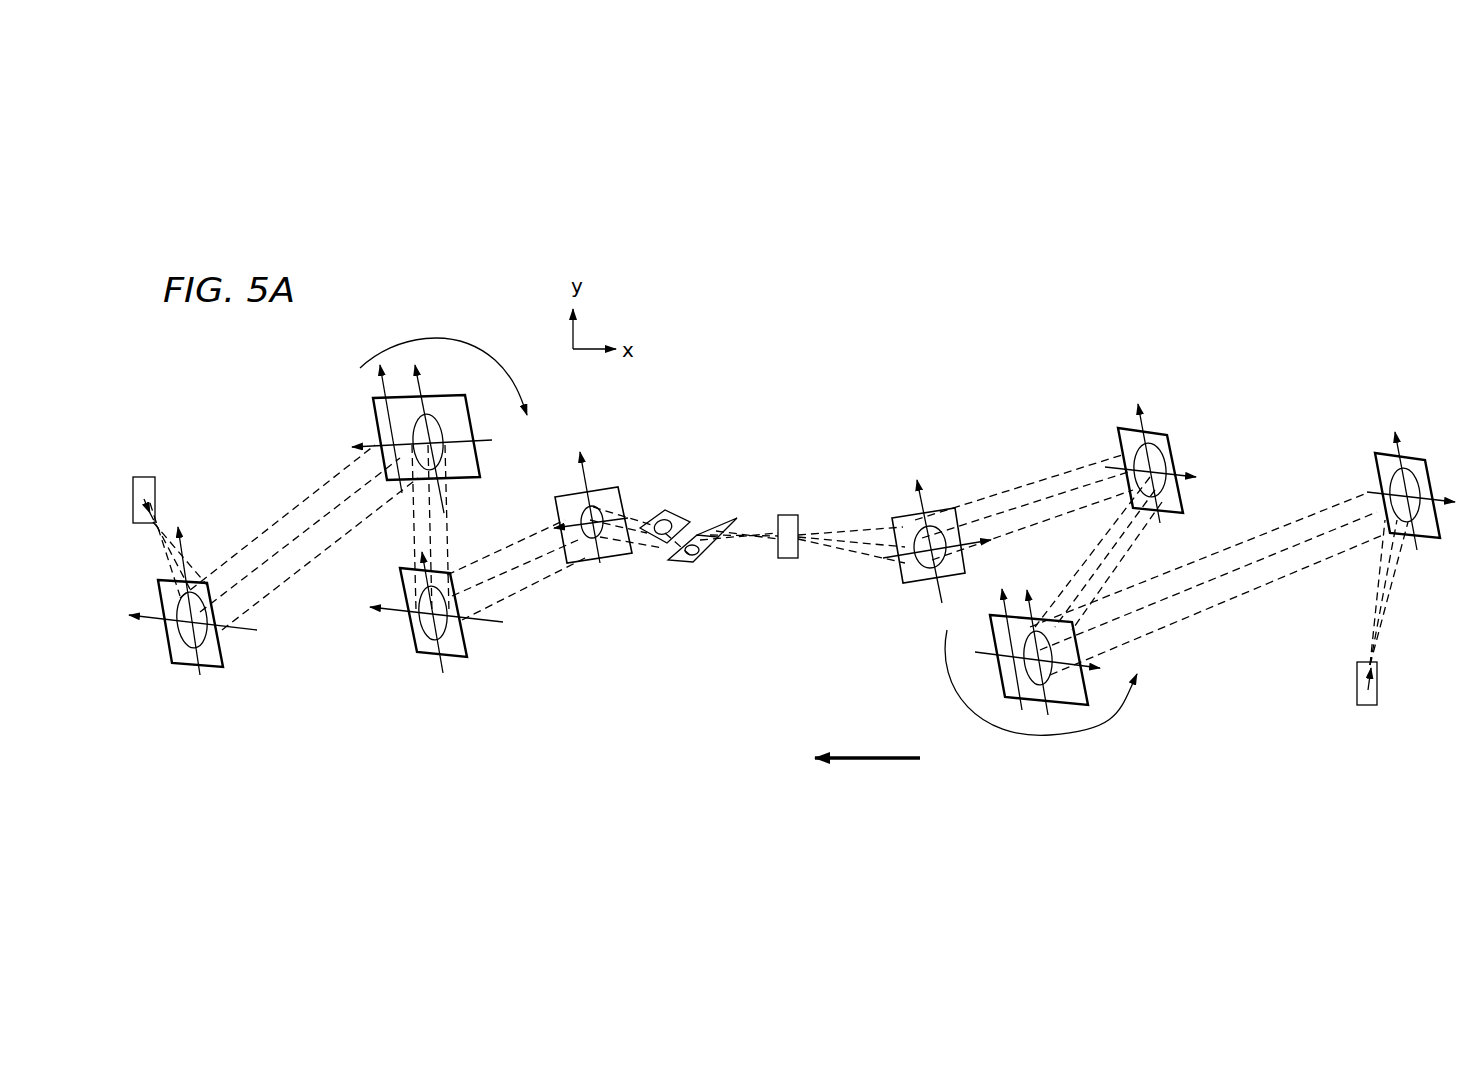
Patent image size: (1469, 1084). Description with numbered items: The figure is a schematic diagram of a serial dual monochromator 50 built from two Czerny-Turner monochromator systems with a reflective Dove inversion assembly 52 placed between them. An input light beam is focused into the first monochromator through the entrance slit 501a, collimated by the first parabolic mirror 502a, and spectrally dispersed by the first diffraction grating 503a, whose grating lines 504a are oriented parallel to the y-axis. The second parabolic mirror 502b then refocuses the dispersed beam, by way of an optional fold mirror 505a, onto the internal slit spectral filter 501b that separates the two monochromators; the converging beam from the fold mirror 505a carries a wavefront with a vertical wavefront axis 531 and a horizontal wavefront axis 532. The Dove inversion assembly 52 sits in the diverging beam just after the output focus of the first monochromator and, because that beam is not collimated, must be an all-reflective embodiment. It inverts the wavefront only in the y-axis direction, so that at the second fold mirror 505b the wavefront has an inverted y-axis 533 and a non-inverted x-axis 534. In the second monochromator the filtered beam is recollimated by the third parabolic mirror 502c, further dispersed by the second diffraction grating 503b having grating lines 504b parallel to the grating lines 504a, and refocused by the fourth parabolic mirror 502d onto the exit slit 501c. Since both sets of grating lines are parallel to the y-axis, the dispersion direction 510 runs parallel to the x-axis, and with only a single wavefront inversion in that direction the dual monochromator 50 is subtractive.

The serial dual monochromator 50 is at (1007, 347).
The Dove reflective inversion assembly 52 is at (677, 478).
The entrance slit 501a is at (1355, 690).
The internal slit spectral filter 501b is at (790, 515).
The exit slit 501c is at (147, 477).
The first parabolic mirror 502a is at (1415, 458).
The second parabolic mirror 502b is at (1157, 433).
The third parabolic mirror 502c is at (425, 662).
The fourth parabolic mirror 502d is at (182, 668).
The first diffraction grating 503a is at (1072, 707).
The second diffraction grating 503b is at (377, 413).
The grating lines 504a is at (1018, 708).
The grating lines 504b is at (385, 385).
The fold mirror 505a is at (900, 577).
The fold mirror 505b is at (582, 560).
The dispersion direction 510 is at (870, 755).
The vertical wavefront axis 531 is at (917, 505).
The horizontal wavefront axis 532 is at (975, 535).
The inverted y-axis 533 is at (588, 478).
The non-inverted x-axis 534 is at (572, 522).